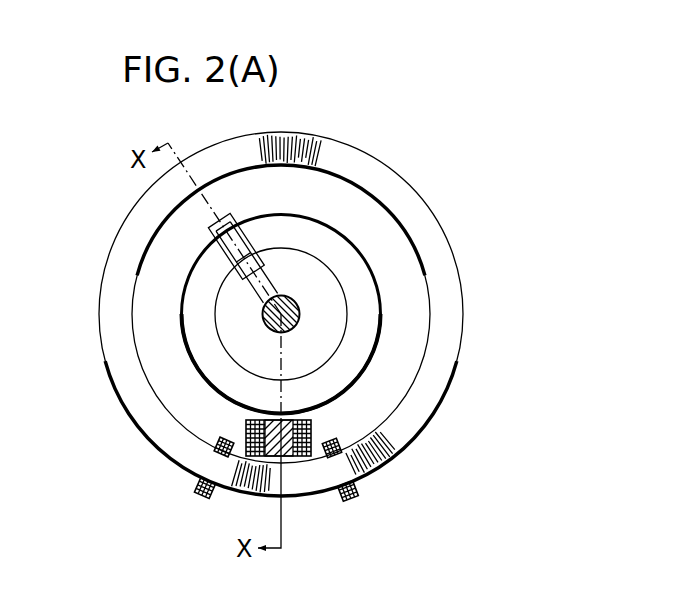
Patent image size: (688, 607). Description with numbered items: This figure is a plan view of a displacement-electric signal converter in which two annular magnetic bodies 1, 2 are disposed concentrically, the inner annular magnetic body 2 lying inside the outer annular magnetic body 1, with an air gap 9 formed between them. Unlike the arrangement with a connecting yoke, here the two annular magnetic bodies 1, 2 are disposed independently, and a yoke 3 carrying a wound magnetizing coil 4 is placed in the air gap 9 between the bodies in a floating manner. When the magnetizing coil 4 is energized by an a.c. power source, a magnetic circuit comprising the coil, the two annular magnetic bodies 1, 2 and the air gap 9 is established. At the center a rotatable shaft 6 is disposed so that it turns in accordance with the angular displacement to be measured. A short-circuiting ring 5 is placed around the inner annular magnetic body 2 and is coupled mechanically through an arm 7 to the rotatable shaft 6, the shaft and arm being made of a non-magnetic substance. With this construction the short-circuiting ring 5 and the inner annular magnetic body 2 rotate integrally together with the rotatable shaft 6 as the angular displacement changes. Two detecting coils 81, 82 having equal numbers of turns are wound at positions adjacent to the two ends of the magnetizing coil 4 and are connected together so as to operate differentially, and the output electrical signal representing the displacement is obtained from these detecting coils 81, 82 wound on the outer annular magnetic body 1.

The annular magnetic body 1 is at (418, 197).
The annular magnetic body 2 is at (375, 350).
The yoke 3 is at (289, 457).
The magnetizing coil 4 is at (246, 425).
The short-circuiting ring 5 is at (236, 246).
The rotatable shaft 6 is at (299, 315).
The arm 7 is at (247, 262).
The detecting coil 81 is at (198, 496).
The detecting coil 82 is at (356, 497).
The air gap 9 is at (378, 408).